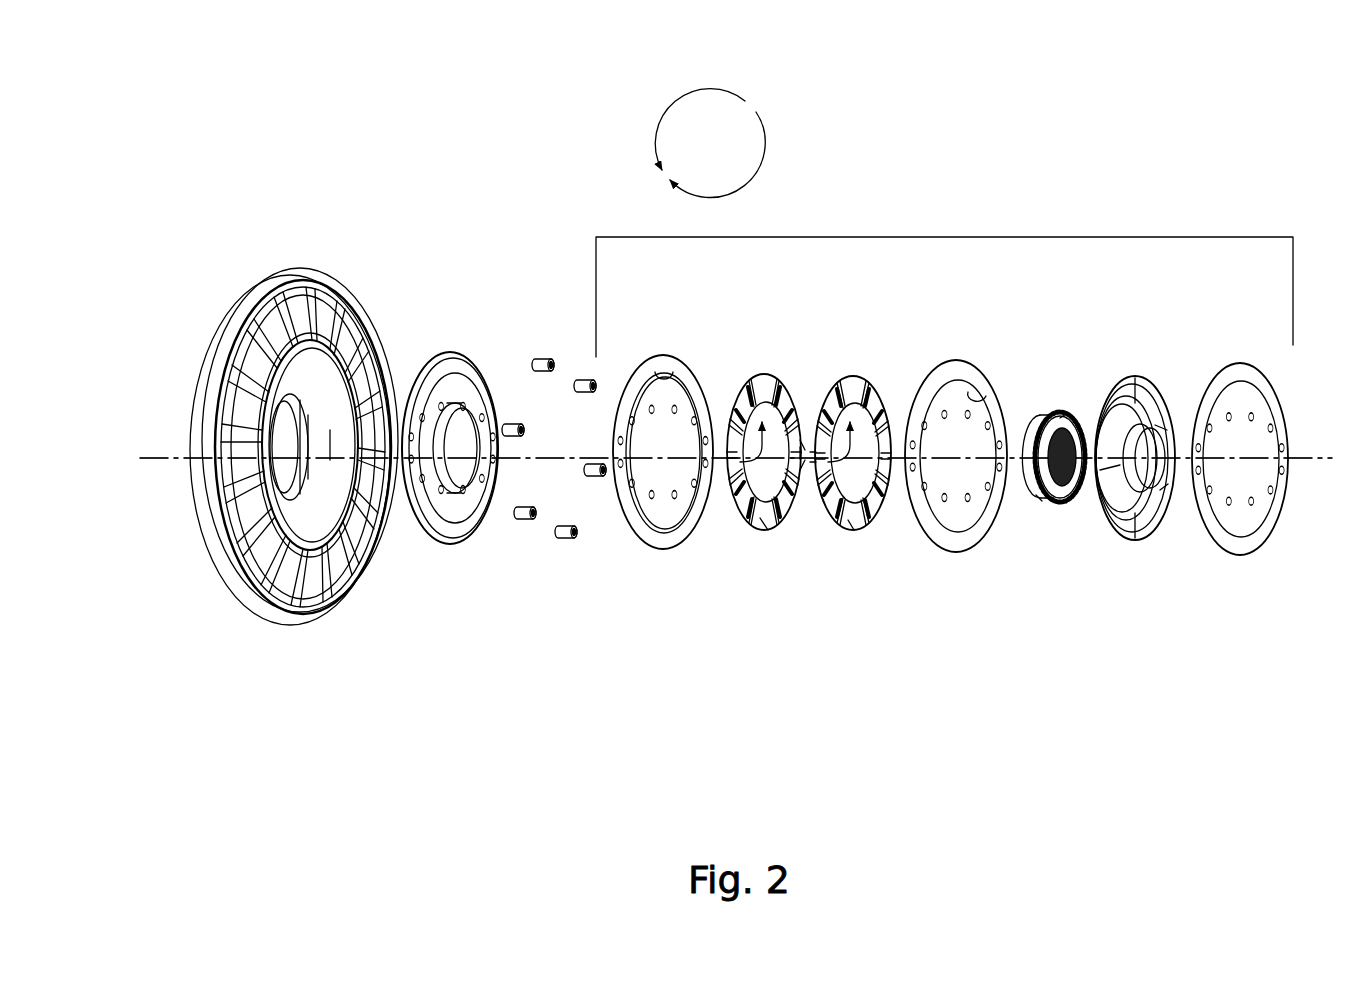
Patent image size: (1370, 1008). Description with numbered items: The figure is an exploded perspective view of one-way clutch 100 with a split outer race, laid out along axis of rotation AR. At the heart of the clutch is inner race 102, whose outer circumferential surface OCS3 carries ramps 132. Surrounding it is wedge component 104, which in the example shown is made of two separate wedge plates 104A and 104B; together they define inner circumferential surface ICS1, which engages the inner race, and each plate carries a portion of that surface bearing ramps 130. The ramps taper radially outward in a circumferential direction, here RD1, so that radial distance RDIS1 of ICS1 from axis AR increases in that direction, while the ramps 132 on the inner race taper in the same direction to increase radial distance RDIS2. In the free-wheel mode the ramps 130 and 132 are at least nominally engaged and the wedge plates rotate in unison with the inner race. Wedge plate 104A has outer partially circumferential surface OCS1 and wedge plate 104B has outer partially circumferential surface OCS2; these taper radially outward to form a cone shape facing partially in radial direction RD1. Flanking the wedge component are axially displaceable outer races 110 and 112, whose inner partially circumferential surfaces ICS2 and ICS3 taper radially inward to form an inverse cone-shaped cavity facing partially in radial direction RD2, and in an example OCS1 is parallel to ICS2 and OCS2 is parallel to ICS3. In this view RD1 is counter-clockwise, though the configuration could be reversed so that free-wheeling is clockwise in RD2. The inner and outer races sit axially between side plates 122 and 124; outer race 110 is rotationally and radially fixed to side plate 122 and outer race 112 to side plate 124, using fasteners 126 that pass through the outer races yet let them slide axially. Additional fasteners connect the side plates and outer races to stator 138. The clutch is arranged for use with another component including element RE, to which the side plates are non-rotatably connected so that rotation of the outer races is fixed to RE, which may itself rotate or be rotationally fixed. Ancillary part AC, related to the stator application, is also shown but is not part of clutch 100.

The one-way clutch 100 is at (943, 237).
The inner race 102 is at (1036, 408).
The wedge component 104 is at (826, 540).
The wedge plate 104A is at (740, 522).
The wedge plate 104B is at (882, 540).
The outer race 110 is at (622, 543).
The outer race 112 is at (968, 556).
The side plate 122 is at (455, 342).
The side plate 124 is at (1239, 358).
The fasteners 126 is at (545, 360).
The ramps 130 is at (786, 537).
The ramps 132 is at (1065, 505).
The stator 138 is at (316, 258).
The element RE is at (312, 495).
The axis of rotation AR is at (531, 470).
The radial direction RD1 is at (683, 93).
The radial direction RD2 is at (757, 173).
The inner circumferential surface ICS1 is at (802, 450).
The inner partially circumferential surface ICS2 is at (656, 363).
The inner partially circumferential surface ICS3 is at (982, 382).
The outer partially circumferential surface OCS1 is at (768, 528).
The outer partially circumferential surface OCS2 is at (853, 532).
The outer circumferential surface OCS3 is at (1068, 410).
The radial distance RDIS1 is at (804, 480).
The radial distance RDIS2 is at (1040, 505).
The ancillary part AC is at (1133, 552).